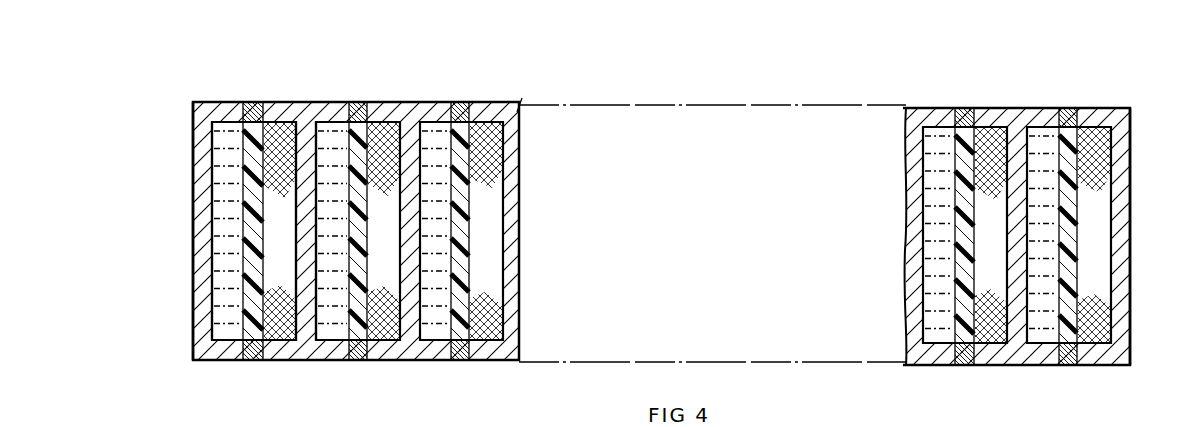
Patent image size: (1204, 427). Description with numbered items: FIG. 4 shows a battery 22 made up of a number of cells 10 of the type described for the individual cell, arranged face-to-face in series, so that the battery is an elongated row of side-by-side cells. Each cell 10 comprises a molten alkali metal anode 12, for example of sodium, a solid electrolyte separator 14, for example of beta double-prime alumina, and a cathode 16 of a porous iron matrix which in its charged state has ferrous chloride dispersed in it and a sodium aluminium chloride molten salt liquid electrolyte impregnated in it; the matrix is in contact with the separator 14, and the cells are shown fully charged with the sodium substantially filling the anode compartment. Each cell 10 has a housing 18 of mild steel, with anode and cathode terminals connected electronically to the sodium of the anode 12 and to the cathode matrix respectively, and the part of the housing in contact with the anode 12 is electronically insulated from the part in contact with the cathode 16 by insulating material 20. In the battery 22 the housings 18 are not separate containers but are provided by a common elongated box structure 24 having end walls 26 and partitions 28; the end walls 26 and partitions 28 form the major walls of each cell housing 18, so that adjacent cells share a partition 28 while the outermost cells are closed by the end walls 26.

The cell 10 is at (455, 382).
The molten alkali metal anode 12 is at (226, 185).
The solid electrolyte separator 14 is at (235, 345).
The cathode 16 is at (279, 345).
The housing 18 is at (303, 236).
The insulating material 20 is at (254, 92).
The battery of cells 22 is at (752, 88).
The common elongated box structure 24 is at (207, 147).
The end walls 26 is at (207, 293).
The partitions 28 is at (487, 310).